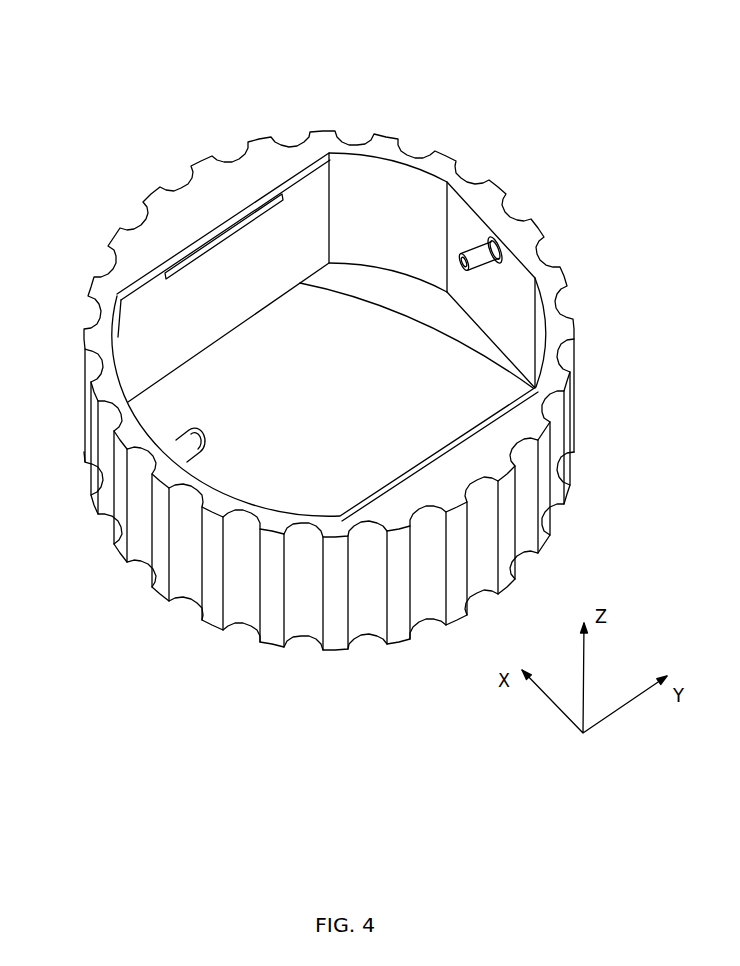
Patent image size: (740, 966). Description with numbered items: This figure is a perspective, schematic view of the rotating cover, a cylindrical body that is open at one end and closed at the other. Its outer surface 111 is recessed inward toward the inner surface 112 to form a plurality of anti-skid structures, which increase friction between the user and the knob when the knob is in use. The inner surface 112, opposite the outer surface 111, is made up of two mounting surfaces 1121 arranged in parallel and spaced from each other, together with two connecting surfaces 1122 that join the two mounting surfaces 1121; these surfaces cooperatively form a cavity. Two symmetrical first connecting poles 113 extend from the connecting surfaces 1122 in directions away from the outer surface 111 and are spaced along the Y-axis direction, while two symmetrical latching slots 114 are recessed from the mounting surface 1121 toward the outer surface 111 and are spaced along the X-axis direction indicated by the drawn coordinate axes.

The outer surface 111 is at (270, 578).
The inner surface 112 is at (329, 271).
The mounting surface 1121 is at (257, 273).
The connecting surface 1122 is at (395, 180).
The first connecting pole 113 is at (480, 252).
The latching slot 114 is at (177, 257).